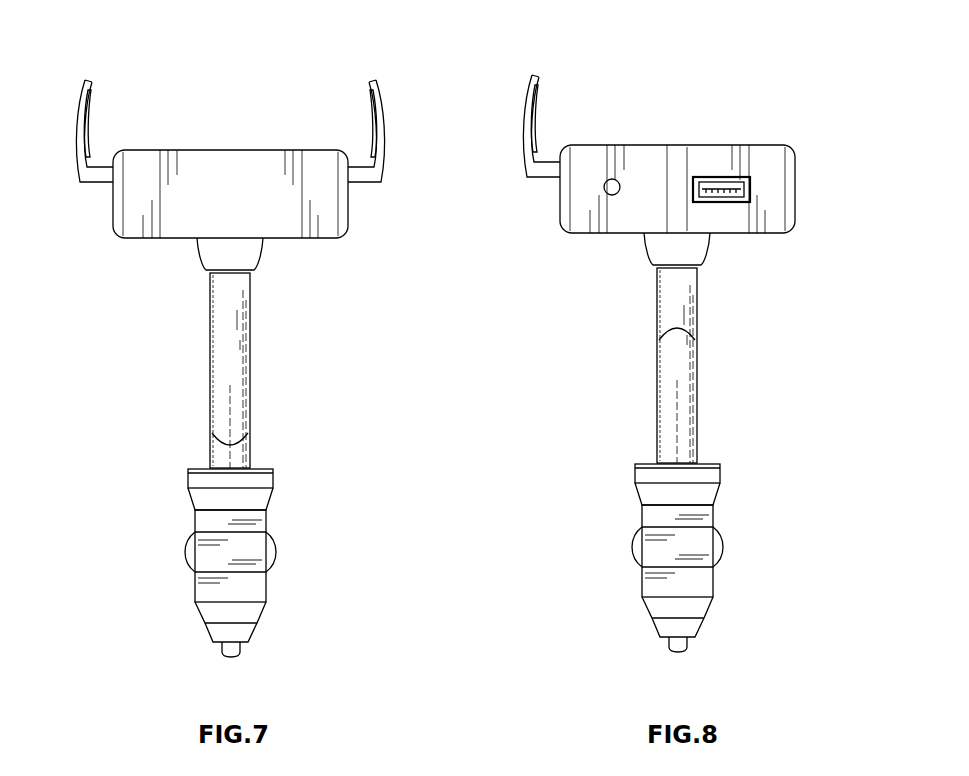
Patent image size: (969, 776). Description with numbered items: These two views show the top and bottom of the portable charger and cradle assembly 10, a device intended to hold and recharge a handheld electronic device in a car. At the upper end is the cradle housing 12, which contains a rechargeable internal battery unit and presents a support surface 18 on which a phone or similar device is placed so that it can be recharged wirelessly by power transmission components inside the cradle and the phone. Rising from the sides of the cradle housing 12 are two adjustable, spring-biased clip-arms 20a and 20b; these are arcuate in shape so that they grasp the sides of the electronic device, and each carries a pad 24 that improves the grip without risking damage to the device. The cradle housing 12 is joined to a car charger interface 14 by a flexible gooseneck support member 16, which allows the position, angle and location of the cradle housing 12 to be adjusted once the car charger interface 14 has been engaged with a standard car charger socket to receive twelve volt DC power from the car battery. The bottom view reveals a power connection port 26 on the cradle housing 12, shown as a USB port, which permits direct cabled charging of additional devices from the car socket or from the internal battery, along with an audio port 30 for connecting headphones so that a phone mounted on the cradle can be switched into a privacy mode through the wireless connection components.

In FIG. 7, the portable charger and cradle assembly 10 is at (99, 55).
In FIG. 8, the portable charger and cradle assembly 10 is at (555, 50).
In FIG. 7, the cradle housing 12 is at (316, 226).
In FIG. 8, the cradle housing 12 is at (718, 224).
In FIG. 7, the car charger interface 14 is at (250, 582).
In FIG. 8, the car charger interface 14 is at (700, 580).
In FIG. 7, the support member 16 is at (228, 320).
In FIG. 8, the support member 16 is at (683, 395).
In FIG. 7, the support surface 18 is at (206, 145).
In FIG. 8, the support surface 18 is at (659, 139).
In FIG. 7, the clip-arm 20a is at (383, 147).
In FIG. 8, the clip-arm 20a is at (530, 163).
In FIG. 7, the clip-arm 20b is at (82, 106).
In FIG. 8, the clip-arm 20b is at (829, 145).
In FIG. 7, the pad 24 is at (92, 112).
In FIG. 8, the pad 24 is at (538, 118).
In FIG. 8, the power connection port 26 is at (725, 162).
In FIG. 8, the audio port 30 is at (612, 195).